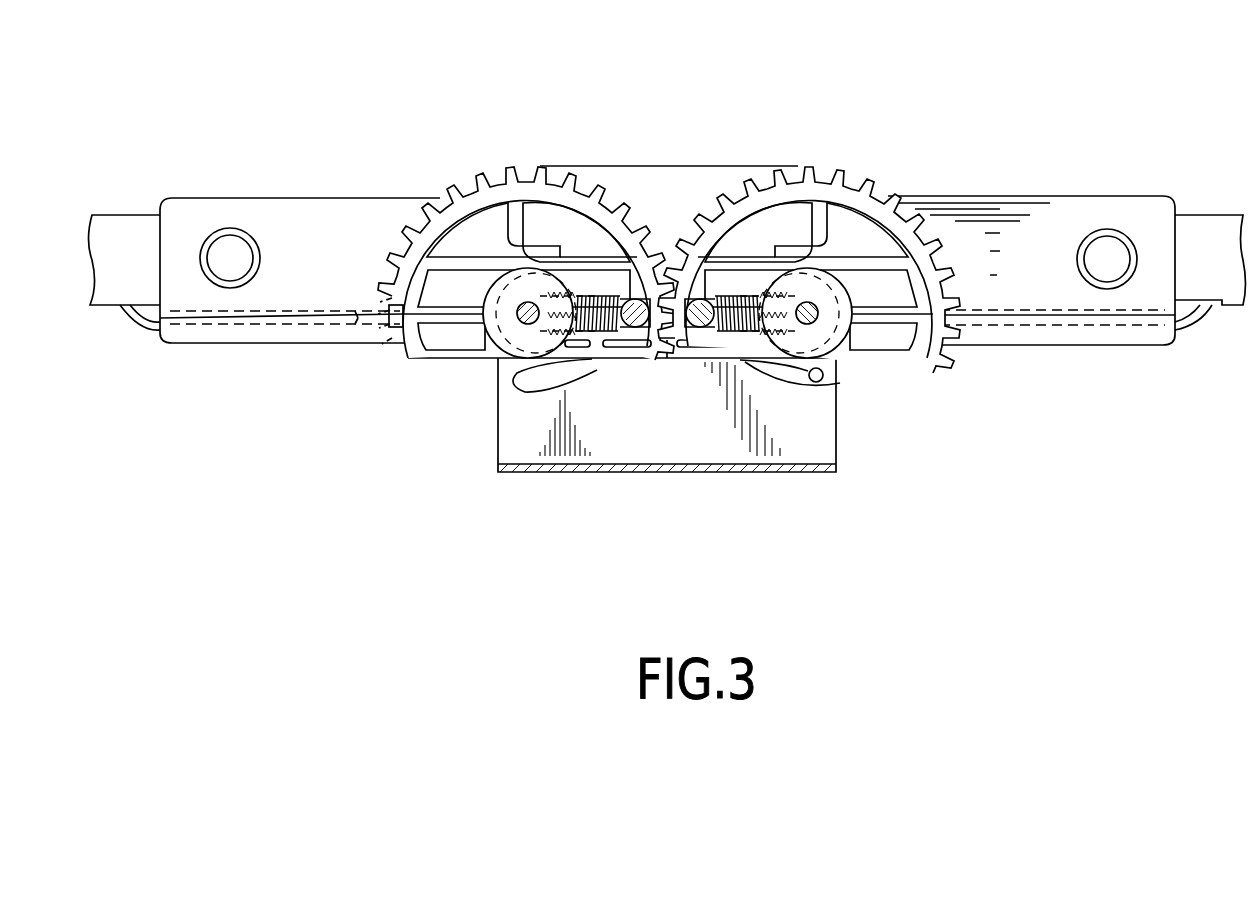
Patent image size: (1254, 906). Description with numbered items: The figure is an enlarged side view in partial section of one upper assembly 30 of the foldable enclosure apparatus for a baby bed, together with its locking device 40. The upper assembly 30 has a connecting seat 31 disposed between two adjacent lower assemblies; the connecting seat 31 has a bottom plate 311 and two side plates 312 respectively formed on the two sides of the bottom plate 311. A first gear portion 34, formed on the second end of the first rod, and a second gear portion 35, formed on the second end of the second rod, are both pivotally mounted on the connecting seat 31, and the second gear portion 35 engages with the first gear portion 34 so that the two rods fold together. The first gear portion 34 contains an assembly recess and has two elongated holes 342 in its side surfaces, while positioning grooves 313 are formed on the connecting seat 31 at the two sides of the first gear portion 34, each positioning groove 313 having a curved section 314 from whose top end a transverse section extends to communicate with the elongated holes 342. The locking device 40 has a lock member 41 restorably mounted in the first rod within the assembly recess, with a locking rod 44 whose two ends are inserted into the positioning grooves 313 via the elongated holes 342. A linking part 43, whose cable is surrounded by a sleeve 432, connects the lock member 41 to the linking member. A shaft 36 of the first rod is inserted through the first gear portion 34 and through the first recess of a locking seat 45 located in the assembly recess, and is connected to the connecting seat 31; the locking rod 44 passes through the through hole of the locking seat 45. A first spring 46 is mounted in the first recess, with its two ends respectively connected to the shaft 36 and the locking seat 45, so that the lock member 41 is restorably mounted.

The upper assembly 30 is at (745, 95).
The connecting seat 31 is at (900, 492).
The bottom plate 311 is at (786, 468).
The side plate 312 is at (820, 446).
The positioning groove 313 is at (815, 400).
The curved section 314 is at (824, 384).
The first gear portion 34 is at (480, 172).
The second gear portion 35 is at (848, 172).
The shaft 36 is at (528, 313).
The locking device 40 is at (462, 334).
The lock member 41 is at (418, 262).
The linking part 43 is at (345, 285).
The sleeve 432 is at (264, 325).
The locking rod 44 is at (640, 367).
The locking seat 45 is at (512, 345).
The first spring 46 is at (600, 342).
The elongated hole 342 is at (633, 318).